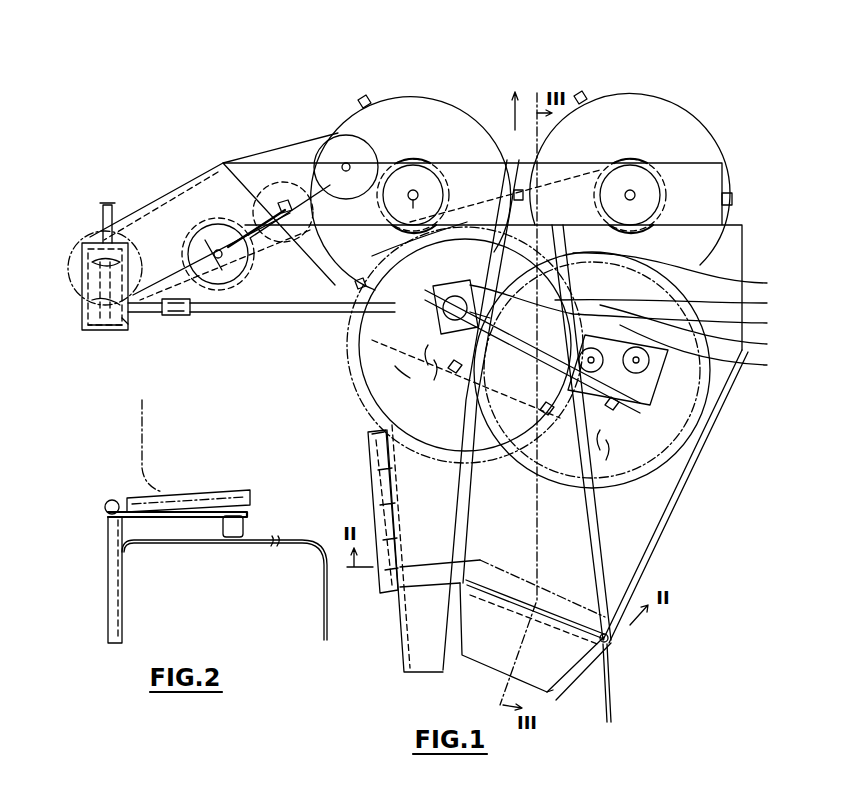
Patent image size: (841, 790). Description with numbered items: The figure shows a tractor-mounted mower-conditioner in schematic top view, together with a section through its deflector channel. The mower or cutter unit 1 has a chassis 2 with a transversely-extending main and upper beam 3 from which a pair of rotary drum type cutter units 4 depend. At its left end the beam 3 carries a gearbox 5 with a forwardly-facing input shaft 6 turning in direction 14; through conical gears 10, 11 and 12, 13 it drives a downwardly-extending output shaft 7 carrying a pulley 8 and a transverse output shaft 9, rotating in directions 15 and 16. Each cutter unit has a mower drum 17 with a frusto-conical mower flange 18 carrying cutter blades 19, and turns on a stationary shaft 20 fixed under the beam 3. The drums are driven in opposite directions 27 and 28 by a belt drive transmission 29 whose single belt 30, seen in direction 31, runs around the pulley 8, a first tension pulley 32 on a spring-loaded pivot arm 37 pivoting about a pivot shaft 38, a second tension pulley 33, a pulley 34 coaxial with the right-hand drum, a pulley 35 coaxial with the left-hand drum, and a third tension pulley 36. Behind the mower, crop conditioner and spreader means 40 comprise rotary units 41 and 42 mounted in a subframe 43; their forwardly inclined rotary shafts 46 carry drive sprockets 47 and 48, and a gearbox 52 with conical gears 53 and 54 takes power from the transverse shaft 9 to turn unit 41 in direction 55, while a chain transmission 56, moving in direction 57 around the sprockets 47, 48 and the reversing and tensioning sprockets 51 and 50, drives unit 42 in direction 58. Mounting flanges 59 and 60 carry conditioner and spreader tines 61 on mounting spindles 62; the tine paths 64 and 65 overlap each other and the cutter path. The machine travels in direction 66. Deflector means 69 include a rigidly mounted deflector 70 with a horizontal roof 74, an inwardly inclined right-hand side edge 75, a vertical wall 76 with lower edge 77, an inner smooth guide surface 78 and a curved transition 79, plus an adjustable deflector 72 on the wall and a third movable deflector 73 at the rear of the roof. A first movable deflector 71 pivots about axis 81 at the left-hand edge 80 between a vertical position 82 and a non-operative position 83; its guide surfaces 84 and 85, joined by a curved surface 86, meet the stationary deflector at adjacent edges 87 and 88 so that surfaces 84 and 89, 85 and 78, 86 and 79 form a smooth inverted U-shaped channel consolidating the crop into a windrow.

In FIG. 1, the mower or cutter unit 1 is at (776, 191).
In FIG. 1, the chassis 2 is at (246, 162).
In FIG. 1, the main and upper beam 3 is at (517, 190).
In FIG. 1, the rotary drum type cutter unit 4 is at (481, 102).
In FIG. 1, the gearbox 5 is at (90, 332).
In FIG. 1, the input shaft 6 is at (113, 207).
In FIG. 1, the output shaft 7 is at (100, 282).
In FIG. 1, the pulley 8 is at (92, 303).
In FIG. 1, the transverse output shaft 9 is at (158, 318).
In FIG. 1, the conical gear 10 is at (88, 258).
In FIG. 1, the conical gear 11 is at (83, 278).
In FIG. 1, the conical gear 12 is at (112, 330).
In FIG. 1, the conical gear 13 is at (126, 322).
In FIG. 1, the direction of movement of the input shaft 14 is at (98, 218).
In FIG. 1, the direction of rotation of output shaft 15 is at (162, 303).
In FIG. 1, the direction of rotation of transverse output shaft 16 is at (218, 310).
In FIG. 1, the mower drum 17 is at (416, 160).
In FIG. 1, the frusto-conical mower flange 18 is at (718, 150).
In FIG. 1, the cutter blade 19 is at (367, 101).
In FIG. 1, the stationary shaft 20 is at (672, 205).
In FIG. 1, the direction of rotation of cutter unit 27 is at (443, 133).
In FIG. 1, the direction of rotation of cutter unit 28 is at (579, 140).
In FIG. 1, the belt drive transmission 29 is at (278, 150).
In FIG. 1, the belt 30 is at (314, 136).
In FIG. 1, the direction of rotation of belt 31 is at (152, 188).
In FIG. 1, the first tension pulley 32 is at (236, 282).
In FIG. 1, the second tension pulley 33 is at (307, 243).
In FIG. 1, the pulley 34 is at (630, 160).
In FIG. 1, the pulley 35 is at (400, 158).
In FIG. 1, the third tension pulley 36 is at (352, 190).
In FIG. 1, the spring-loaded pivot arm 37 is at (242, 262).
In FIG. 1, the pivot shaft 38 is at (278, 207).
In FIG. 1, the crop conditioner and spreader means 40 is at (767, 417).
In FIG. 1, the rotary conditioner and spreader unit 41 is at (362, 412).
In FIG. 1, the rotary conditioner and spreader unit 42 is at (680, 460).
In FIG. 1, the subframe 43 is at (685, 271).
In FIG. 1, the rotary shaft 46 is at (370, 340).
In FIG. 1, the drive sprocket 47 is at (418, 292).
In FIG. 1, the drive sprocket 48 is at (708, 350).
In FIG. 1, the tensioning sprocket 50 is at (645, 415).
In FIG. 1, the reversing sprocket 51 is at (665, 360).
In FIG. 1, the gearbox 52 is at (458, 294).
In FIG. 1, the conical gear 53 is at (440, 286).
In FIG. 1, the conical gear 54 is at (480, 312).
In FIG. 1, the direction of rotation of left-hand rotary unit 55 is at (504, 288).
In FIG. 1, the chain transmission 56 is at (676, 301).
In FIG. 1, the direction of movement of chain 57 is at (633, 309).
In FIG. 1, the direction of rotation of right-hand rotary unit 58 is at (698, 329).
In FIG. 1, the mounting flange 59 is at (428, 356).
In FIG. 1, the mounting flange 60 is at (435, 372).
In FIG. 1, the conditioner and spreader tine 61 is at (386, 251).
In FIG. 1, the mounting spindle 62 is at (447, 385).
In FIG. 1, the path of tine ends 64 is at (416, 445).
In FIG. 1, the path of tine ends 65 is at (520, 478).
In FIG. 1, the direction of travel 66 is at (517, 105).
In FIG. 1, the deflector means 69 is at (742, 529).
In FIG. 2, the deflector means 69 is at (212, 472).
In FIG. 1, the rigidly mounted deflector 70 is at (682, 493).
In FIG. 2, the rigidly mounted deflector 70 is at (240, 511).
In FIG. 1, the first movable deflector 71 is at (402, 652).
In FIG. 2, the first movable deflector 71 is at (108, 570).
In FIG. 1, the adjustable deflector 72 is at (612, 690).
In FIG. 1, the third movable deflector 73 is at (549, 697).
In FIG. 1, the roof or top section 74 is at (600, 580).
In FIG. 2, the roof or top section 74 is at (270, 538).
In FIG. 1, the right-hand side edge 75 is at (655, 560).
In FIG. 2, the right-hand side edge 75 is at (300, 548).
In FIG. 1, the vertical wall 76 is at (668, 545).
In FIG. 2, the vertical wall 76 is at (325, 614).
In FIG. 2, the lower edge 77 is at (326, 650).
In FIG. 2, the inner smooth guide surface 78 is at (286, 546).
In FIG. 2, the smoothly curved transition 79 is at (313, 562).
In FIG. 1, the left-hand edge 80 is at (398, 625).
In FIG. 2, the left-hand edge 80 is at (150, 500).
In FIG. 1, the pivot axis 81 is at (386, 590).
In FIG. 2, the pivot axis 81 is at (106, 503).
In FIG. 2, the vertical position 82 is at (108, 610).
In FIG. 2, the non-operative position 83 is at (150, 442).
In FIG. 2, the inner guide surface 84 is at (123, 618).
In FIG. 2, the upper horizontal surface 85 is at (176, 545).
In FIG. 2, the smooth curved surface 86 is at (136, 545).
In FIG. 2, the edge 87 is at (216, 545).
In FIG. 2, the edge 88 is at (230, 540).
In FIG. 2, the guide surface 89 is at (325, 635).